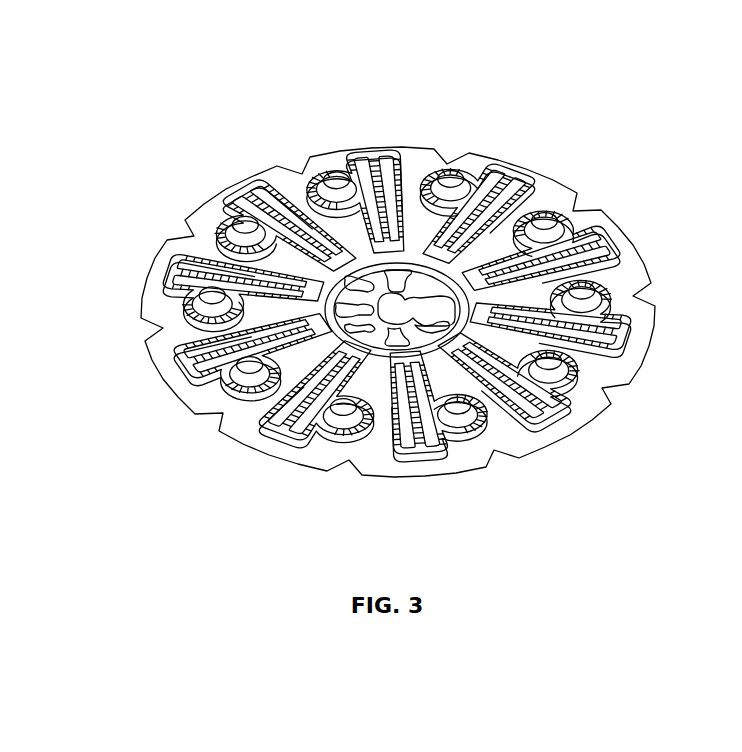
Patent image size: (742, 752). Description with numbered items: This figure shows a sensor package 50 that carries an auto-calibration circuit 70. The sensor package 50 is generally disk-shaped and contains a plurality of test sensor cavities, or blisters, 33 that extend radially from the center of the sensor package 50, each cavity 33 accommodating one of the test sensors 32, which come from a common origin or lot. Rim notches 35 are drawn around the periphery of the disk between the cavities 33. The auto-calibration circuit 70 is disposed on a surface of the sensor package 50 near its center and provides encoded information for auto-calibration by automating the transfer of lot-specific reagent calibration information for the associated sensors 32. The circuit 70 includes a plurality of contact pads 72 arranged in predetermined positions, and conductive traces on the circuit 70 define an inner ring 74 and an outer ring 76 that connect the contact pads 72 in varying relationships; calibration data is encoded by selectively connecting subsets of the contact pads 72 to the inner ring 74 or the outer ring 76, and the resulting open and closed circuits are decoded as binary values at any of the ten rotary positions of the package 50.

The test sensor 32 is at (230, 188).
The test sensor cavity 33 is at (240, 207).
The rim notch 35 is at (170, 233).
The sensor package 50 is at (396, 307).
The auto-calibration circuit 70 is at (407, 305).
The contact pad 72 is at (425, 282).
The inner ring 74 is at (400, 283).
The outer ring 76 is at (388, 352).